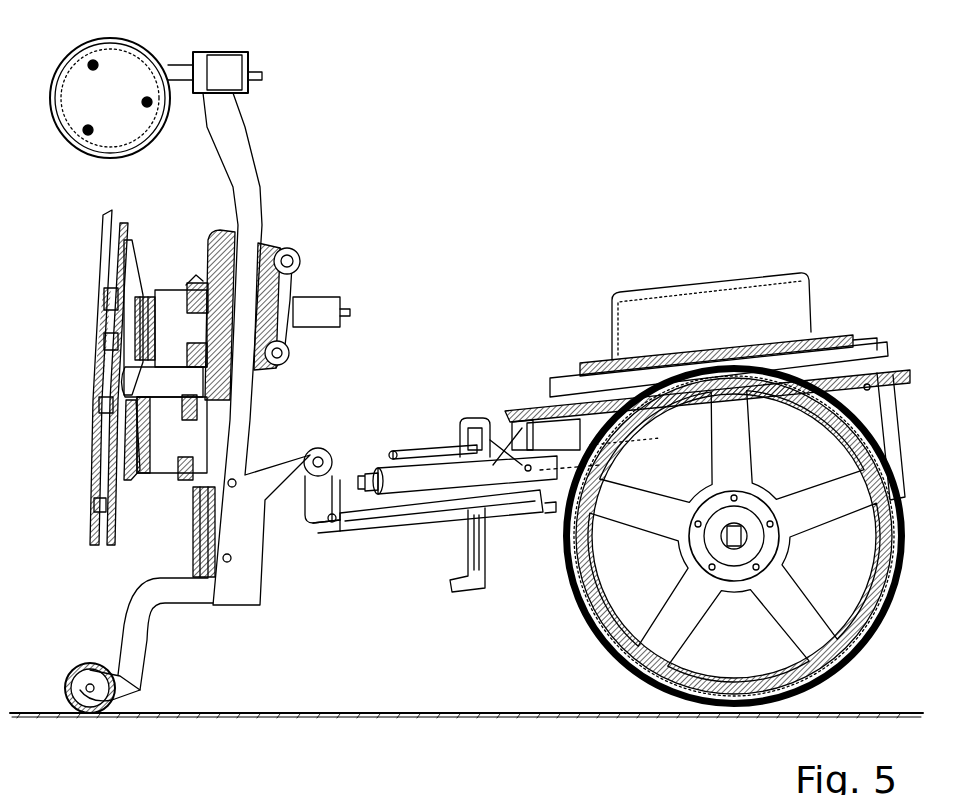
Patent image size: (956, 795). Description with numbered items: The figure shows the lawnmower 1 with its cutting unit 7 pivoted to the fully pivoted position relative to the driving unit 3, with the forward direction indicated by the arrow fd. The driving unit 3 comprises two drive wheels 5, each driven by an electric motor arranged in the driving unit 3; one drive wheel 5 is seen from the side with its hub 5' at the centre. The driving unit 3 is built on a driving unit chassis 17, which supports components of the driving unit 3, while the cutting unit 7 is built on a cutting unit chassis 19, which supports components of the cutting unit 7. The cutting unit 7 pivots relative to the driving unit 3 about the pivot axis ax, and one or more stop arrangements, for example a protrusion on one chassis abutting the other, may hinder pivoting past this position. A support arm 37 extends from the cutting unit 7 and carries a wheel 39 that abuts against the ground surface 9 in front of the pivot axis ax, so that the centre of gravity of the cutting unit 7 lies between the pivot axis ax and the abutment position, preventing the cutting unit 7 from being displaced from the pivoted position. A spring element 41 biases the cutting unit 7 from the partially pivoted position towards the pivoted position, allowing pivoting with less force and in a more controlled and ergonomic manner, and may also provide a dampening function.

The lawnmower 1 is at (697, 177).
The driving unit 3 is at (804, 231).
The cutting unit 7 is at (289, 124).
The drive wheel 5 is at (702, 536).
The wheel axle / hub 5' is at (641, 564).
The ground surface 9 is at (366, 711).
The driving unit chassis 17 is at (509, 466).
The cutting unit chassis 19 is at (262, 186).
The support arm 37 is at (135, 648).
The wheel 39 is at (72, 683).
The spring element 41 is at (394, 514).
The pivot axis ax is at (316, 452).
The forward driving direction fd is at (543, 185).